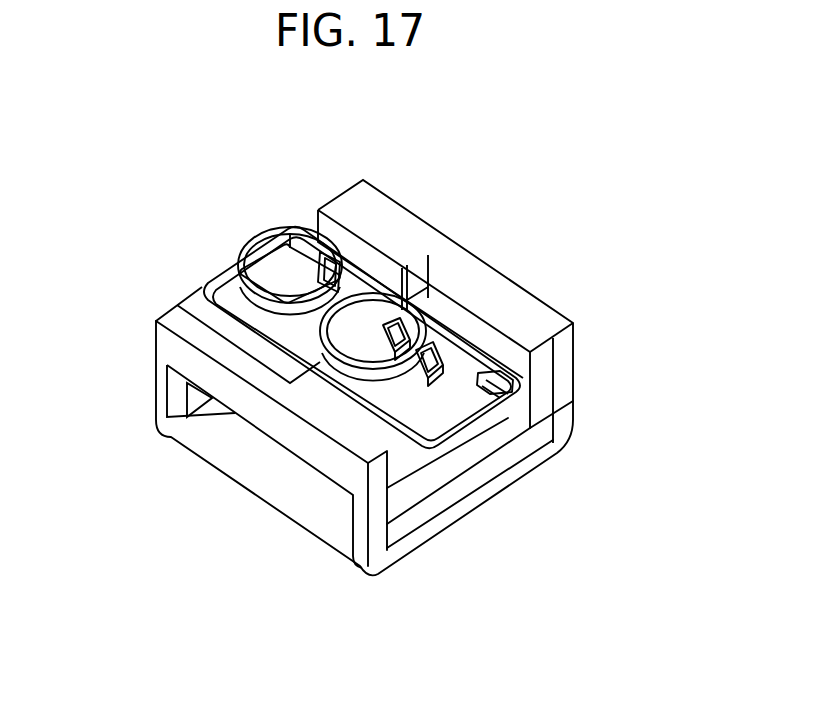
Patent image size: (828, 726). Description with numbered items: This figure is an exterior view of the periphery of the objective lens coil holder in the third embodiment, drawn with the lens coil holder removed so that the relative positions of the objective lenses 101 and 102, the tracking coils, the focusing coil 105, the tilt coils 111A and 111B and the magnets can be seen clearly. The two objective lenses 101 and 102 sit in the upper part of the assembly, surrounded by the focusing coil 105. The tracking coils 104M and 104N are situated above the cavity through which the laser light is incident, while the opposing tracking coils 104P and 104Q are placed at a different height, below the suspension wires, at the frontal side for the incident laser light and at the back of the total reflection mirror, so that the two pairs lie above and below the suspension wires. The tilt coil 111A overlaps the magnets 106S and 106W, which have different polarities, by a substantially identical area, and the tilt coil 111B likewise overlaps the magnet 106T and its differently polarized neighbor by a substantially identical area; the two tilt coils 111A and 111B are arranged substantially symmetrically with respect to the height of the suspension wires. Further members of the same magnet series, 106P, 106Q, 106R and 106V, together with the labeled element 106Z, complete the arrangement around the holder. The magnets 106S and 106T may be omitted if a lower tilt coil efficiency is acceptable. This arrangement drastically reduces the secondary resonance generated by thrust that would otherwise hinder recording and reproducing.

The objective lens 101 is at (268, 240).
The objective lens 102 is at (380, 370).
The tracking coil 104M is at (295, 375).
The tracking coil 104N is at (322, 402).
The tracking coil 104P is at (456, 336).
The tracking coil 104Q is at (412, 285).
The focusing coil 105 is at (460, 433).
The housing left rail 106P is at (208, 310).
The housing front rail step 106Q is at (280, 388).
The housing front wall step 106R is at (365, 424).
The magnet 106S is at (523, 337).
The magnet 106T is at (360, 218).
The housing rib 106V is at (432, 298).
The magnet 106W is at (543, 399).
The housing left end 106Z is at (162, 402).
The tilt coil 111A is at (492, 405).
The tilt coil 111B is at (318, 238).